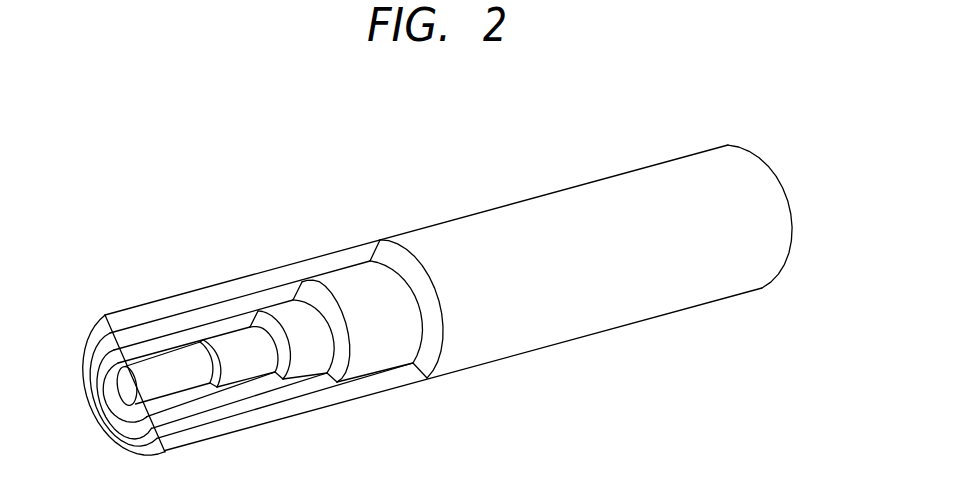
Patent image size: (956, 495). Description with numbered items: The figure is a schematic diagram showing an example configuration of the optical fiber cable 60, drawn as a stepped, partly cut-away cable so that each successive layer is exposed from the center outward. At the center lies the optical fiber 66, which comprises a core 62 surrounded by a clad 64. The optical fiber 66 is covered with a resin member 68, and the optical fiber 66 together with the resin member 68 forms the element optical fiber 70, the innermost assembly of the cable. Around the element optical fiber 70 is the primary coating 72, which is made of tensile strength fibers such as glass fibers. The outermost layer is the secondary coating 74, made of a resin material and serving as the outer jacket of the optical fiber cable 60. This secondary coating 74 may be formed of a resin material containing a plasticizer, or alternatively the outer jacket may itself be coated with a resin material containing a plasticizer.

The optical fiber cable 60 is at (588, 124).
The core 62 is at (165, 367).
The clad 64 is at (228, 347).
The optical fiber 66 is at (245, 214).
The resin member 68 is at (288, 313).
The element optical fiber 70 is at (305, 168).
The primary coating 72 is at (355, 283).
The secondary coating 74 is at (442, 237).